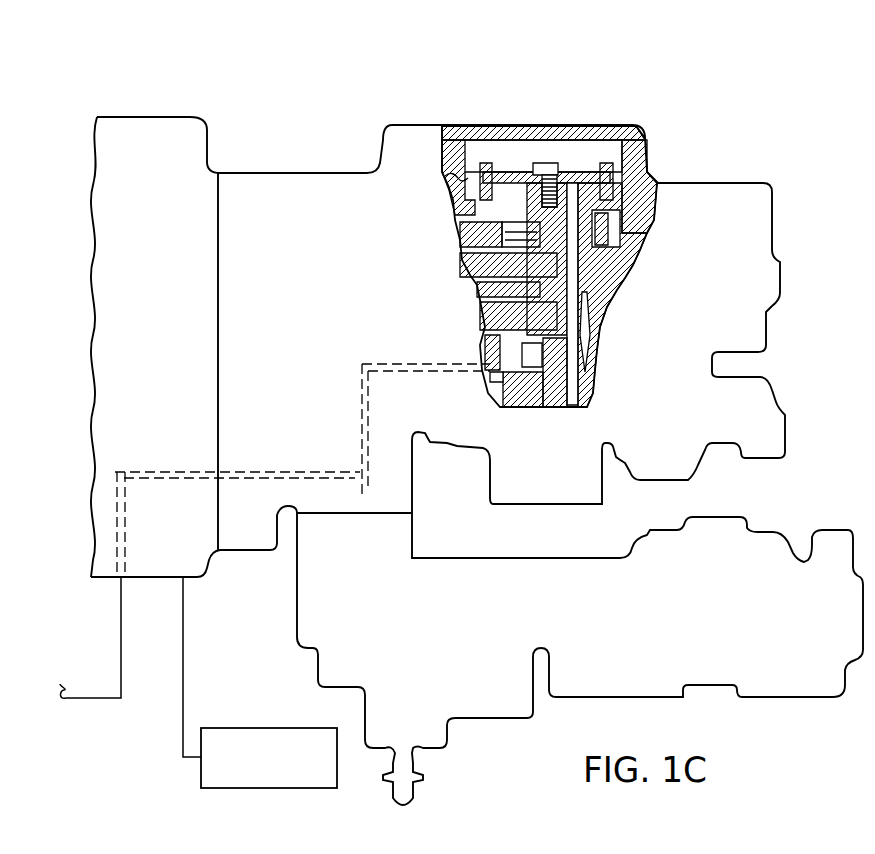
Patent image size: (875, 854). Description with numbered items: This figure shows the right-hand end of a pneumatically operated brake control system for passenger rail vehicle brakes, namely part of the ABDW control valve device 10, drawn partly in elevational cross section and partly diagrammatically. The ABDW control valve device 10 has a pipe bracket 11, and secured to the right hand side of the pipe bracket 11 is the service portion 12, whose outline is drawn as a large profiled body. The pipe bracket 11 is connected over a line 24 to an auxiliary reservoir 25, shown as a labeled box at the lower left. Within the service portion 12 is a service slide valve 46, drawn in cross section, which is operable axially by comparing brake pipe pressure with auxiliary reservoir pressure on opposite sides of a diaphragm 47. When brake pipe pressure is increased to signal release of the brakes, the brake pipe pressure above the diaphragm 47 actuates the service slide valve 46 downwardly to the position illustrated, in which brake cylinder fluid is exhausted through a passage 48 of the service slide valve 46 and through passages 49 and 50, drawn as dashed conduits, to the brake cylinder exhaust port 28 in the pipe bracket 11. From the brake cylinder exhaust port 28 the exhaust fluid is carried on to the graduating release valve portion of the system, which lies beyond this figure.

The ABDW control valve device 10 is at (152, 59).
The pipe bracket 11 is at (192, 115).
The service portion 12 is at (306, 170).
The line 24 is at (185, 628).
The auxiliary reservoir 25 is at (252, 727).
The brake cylinder exhaust port 28 is at (118, 579).
The service slide valve 46 is at (572, 377).
The diaphragm 47 is at (442, 183).
The passage 48 is at (487, 374).
The passage 49 is at (440, 363).
The passage 50 is at (283, 470).